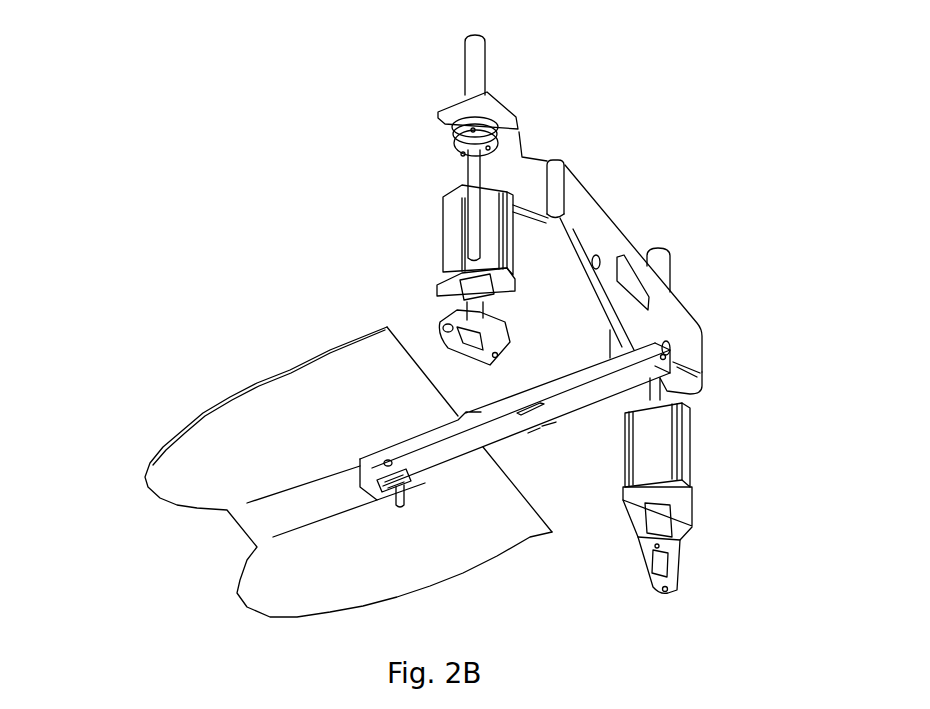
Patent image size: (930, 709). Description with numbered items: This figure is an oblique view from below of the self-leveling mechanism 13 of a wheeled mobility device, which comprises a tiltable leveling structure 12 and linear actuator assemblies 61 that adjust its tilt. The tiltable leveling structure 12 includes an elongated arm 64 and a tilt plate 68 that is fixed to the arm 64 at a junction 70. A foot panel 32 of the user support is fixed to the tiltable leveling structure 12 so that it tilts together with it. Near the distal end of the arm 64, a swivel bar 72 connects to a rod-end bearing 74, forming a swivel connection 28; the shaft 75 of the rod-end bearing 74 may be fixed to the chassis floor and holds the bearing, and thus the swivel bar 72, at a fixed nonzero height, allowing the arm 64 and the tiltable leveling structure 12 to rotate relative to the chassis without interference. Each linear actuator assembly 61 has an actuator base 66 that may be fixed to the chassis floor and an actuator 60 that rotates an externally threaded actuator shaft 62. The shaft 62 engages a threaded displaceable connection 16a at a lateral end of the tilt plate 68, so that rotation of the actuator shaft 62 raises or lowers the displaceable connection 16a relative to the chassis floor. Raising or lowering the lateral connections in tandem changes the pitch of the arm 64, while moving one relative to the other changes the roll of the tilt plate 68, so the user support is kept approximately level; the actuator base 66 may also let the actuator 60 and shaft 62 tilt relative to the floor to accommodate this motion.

The tiltable leveling structure 12 is at (268, 302).
The self-leveling mechanism 13 is at (170, 115).
The displaceable connection 16a is at (447, 117).
The swivel connection 28 is at (345, 445).
The foot panel 32 is at (155, 450).
The actuator 60 is at (440, 243).
The linear actuator assembly 61 is at (355, 185).
The actuator shaft 62 is at (472, 177).
The arm 64 is at (493, 435).
The actuator base 66 is at (445, 325).
The tilt plate 68 is at (620, 233).
The junction 70 is at (670, 362).
The swivel bar 72 is at (388, 461).
The rod-end bearing 74 is at (410, 480).
The shaft 75 is at (399, 506).